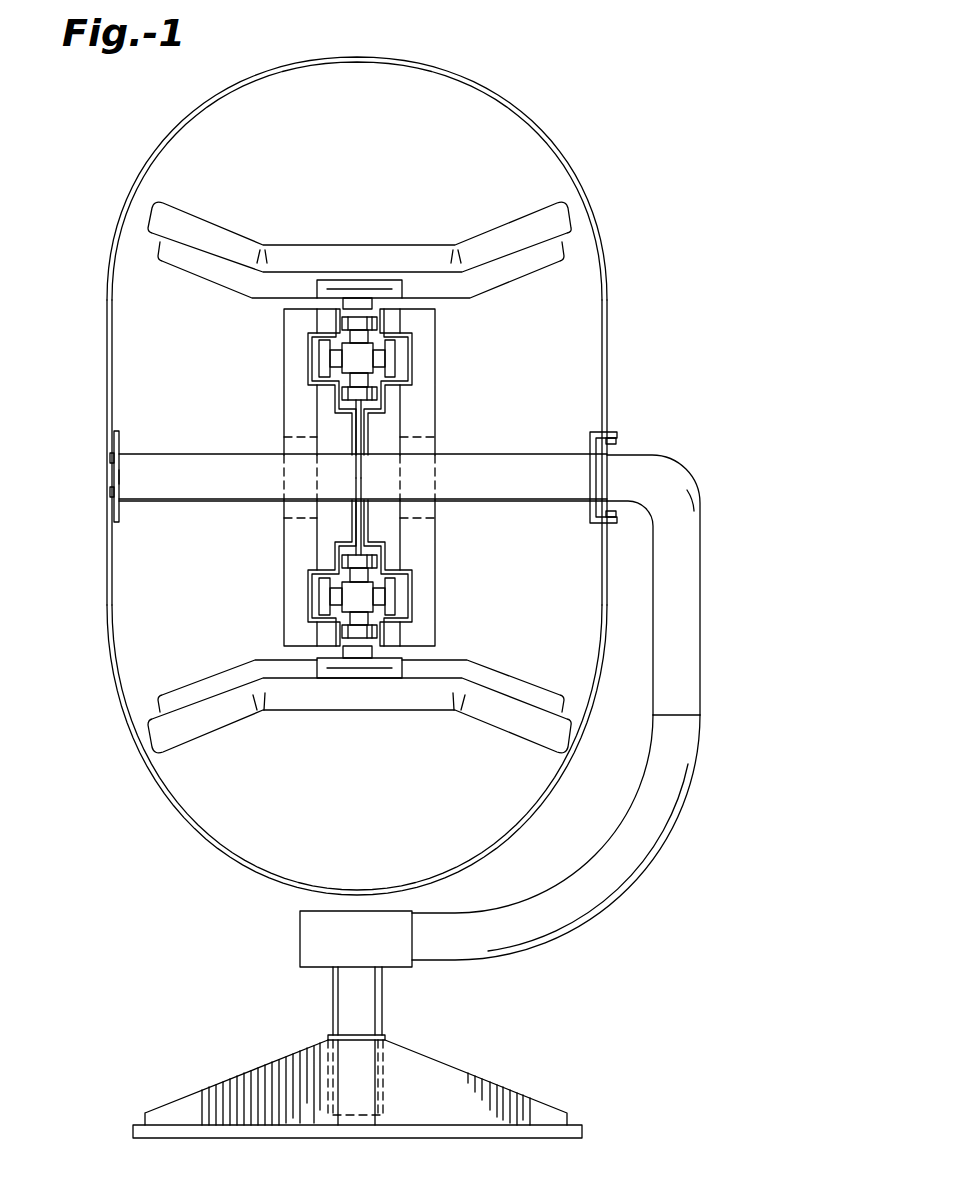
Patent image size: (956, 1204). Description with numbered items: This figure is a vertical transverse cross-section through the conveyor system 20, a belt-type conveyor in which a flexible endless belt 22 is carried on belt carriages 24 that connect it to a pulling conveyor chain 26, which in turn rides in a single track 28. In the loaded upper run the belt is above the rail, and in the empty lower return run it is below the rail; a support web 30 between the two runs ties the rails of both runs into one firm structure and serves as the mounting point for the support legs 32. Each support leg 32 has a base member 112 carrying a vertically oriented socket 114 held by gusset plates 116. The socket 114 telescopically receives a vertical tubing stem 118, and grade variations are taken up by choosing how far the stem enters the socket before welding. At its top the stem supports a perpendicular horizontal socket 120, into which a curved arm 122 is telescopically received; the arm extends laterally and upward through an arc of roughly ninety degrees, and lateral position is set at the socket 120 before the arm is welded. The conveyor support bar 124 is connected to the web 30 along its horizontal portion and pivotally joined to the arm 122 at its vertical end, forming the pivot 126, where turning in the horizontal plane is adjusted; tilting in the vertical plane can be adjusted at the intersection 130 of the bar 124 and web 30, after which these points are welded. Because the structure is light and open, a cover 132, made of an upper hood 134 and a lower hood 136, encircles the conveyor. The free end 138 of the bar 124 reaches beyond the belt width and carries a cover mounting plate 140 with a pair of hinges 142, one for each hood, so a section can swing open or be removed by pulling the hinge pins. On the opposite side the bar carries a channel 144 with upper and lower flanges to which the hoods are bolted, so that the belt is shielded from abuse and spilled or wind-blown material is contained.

The conveyor system 20 is at (364, 461).
The flexible endless belt 22 is at (225, 221).
The belt carriage 24 is at (338, 308).
The pulling conveyor chain 26 is at (396, 358).
The track 28 is at (415, 336).
The support web 30 is at (368, 484).
The support leg 32 is at (674, 786).
The base member 112 is at (586, 1130).
The socket 114 is at (387, 1040).
The gusset plate 116 is at (222, 1088).
The vertical tubing stem 118 is at (346, 997).
The horizontal socket 120 is at (312, 940).
The curved arm 122 is at (595, 905).
The conveyor support bar 124 is at (218, 488).
The pivot 126 is at (700, 555).
The intersection 130 is at (366, 505).
The cover 132 is at (612, 318).
The upper hood 134 is at (575, 184).
The lower hood 136 is at (163, 812).
The free end 138 is at (122, 476).
The cover mounting plate 140 is at (112, 468).
The hinge 142 is at (115, 433).
The channel 144 is at (592, 445).